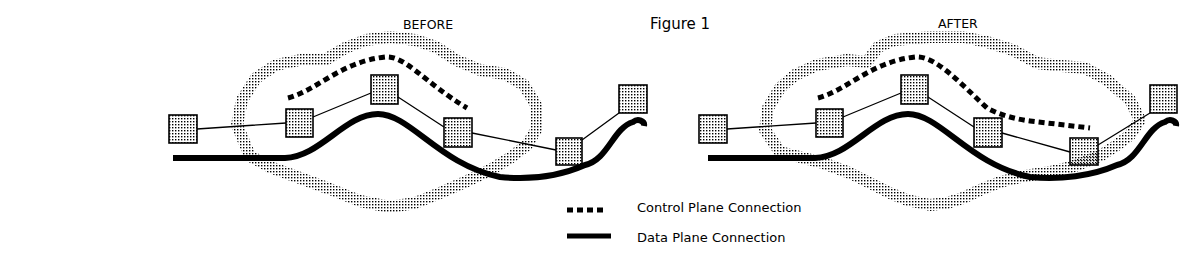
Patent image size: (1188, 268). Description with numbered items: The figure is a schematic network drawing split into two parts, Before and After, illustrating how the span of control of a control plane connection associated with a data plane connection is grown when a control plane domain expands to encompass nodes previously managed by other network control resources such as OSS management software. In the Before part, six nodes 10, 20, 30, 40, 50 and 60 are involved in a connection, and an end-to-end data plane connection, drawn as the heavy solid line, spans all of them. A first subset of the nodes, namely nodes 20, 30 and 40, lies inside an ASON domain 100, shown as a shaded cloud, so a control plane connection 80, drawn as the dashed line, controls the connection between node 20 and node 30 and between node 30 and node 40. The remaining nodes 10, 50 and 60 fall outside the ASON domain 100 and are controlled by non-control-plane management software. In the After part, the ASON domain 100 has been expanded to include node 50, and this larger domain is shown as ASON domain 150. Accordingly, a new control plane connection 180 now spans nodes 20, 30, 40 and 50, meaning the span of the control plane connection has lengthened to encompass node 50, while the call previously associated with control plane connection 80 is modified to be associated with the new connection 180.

The node 10 is at (175, 140).
The node 20 is at (297, 118).
The node 30 is at (390, 97).
The node 40 is at (455, 147).
The node 50 is at (557, 140).
The node 60 is at (642, 95).
The control plane connection 80 is at (320, 88).
The ASON domain 100 is at (328, 188).
The ASON domain 150 is at (907, 198).
The control plane connection 180 is at (847, 90).